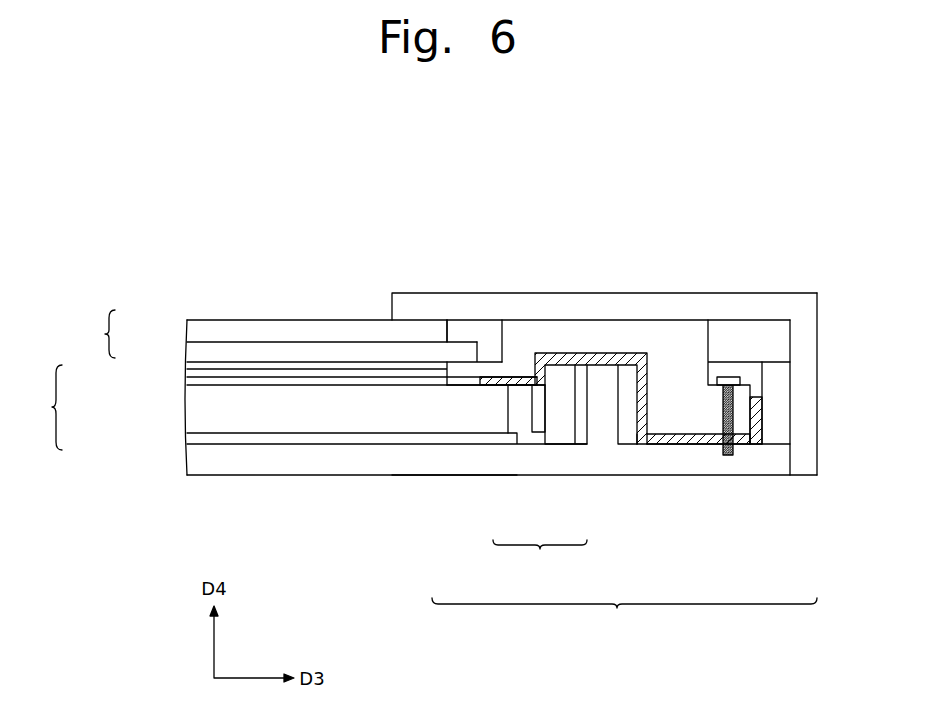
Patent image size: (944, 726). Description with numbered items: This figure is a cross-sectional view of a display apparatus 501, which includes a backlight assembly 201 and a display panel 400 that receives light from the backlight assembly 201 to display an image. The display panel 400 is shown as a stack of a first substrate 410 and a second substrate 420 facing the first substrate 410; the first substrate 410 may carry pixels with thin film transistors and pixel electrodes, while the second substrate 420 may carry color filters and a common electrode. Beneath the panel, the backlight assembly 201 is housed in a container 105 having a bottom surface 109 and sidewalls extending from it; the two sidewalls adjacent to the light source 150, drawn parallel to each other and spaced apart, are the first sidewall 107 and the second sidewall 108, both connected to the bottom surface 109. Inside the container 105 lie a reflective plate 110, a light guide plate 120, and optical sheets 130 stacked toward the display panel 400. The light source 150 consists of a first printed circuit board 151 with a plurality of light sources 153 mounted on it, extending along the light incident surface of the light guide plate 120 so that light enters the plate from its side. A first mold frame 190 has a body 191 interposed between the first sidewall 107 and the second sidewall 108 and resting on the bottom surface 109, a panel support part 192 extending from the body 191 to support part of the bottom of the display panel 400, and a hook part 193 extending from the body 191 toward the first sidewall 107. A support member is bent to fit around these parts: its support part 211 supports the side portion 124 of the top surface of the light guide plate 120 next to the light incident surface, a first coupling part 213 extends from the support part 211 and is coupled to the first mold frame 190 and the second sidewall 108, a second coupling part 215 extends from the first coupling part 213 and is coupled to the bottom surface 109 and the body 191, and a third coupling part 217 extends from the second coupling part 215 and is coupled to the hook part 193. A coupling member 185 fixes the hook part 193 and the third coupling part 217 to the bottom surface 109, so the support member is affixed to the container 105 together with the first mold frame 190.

The container 105 is at (624, 615).
The first sidewall 107 is at (778, 415).
The second sidewall 108 is at (613, 417).
The bottom surface 109 is at (443, 462).
The reflective plate 110 is at (185, 440).
The light guide plate 120 is at (185, 408).
The optical sheets 130 is at (186, 373).
The side portion 124 is at (483, 386).
The light source 150 is at (540, 557).
The first printed circuit board 151 is at (561, 433).
The light sources 153 is at (533, 408).
The coupling member 185 is at (727, 455).
The first mold frame 190 is at (648, 319).
The body 191 is at (697, 445).
The panel support part 192 is at (460, 367).
The hook part 193 is at (745, 393).
The backlight assembly 201 is at (39, 407).
The support part 211 is at (512, 380).
The first coupling part 213 is at (602, 362).
The second coupling part 215 is at (660, 434).
The third coupling part 217 is at (757, 388).
The display panel 400 is at (92, 334).
The first substrate 410 is at (185, 357).
The second substrate 420 is at (185, 323).
The display apparatus 501 is at (810, 278).